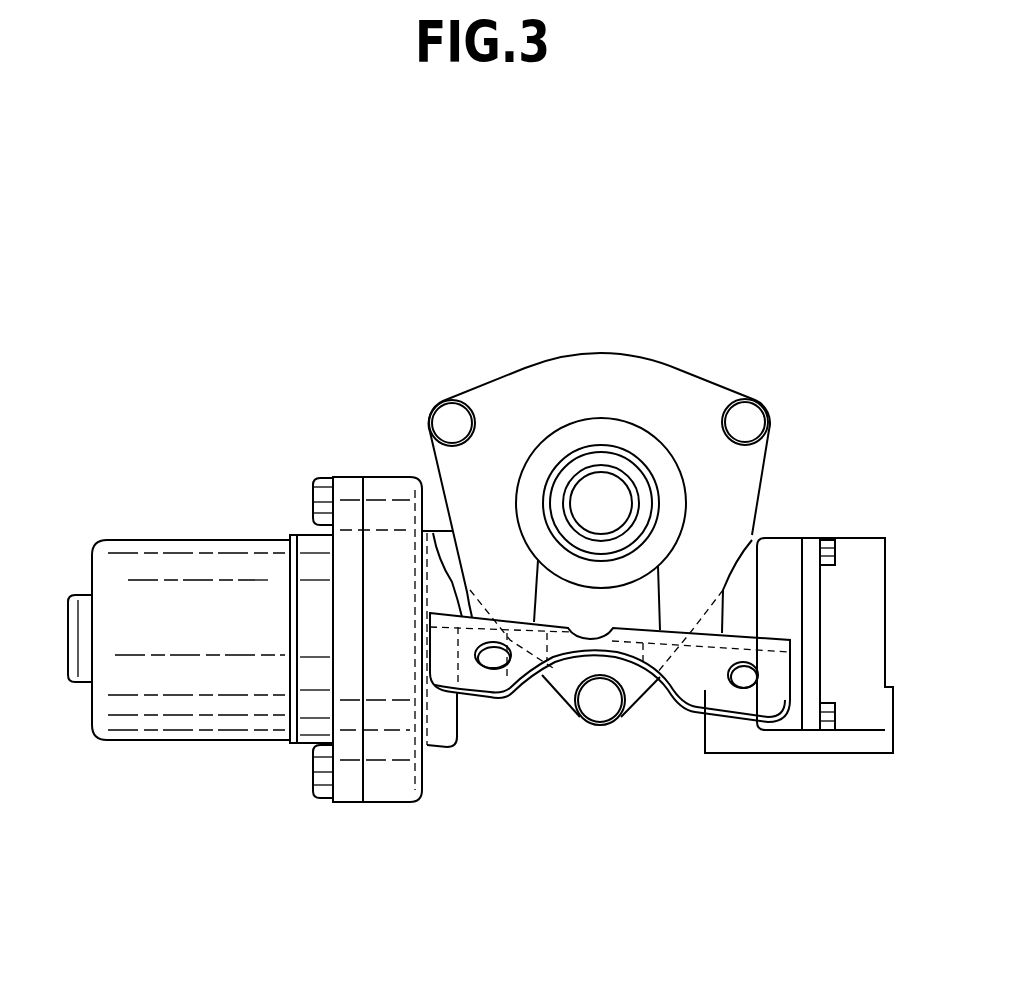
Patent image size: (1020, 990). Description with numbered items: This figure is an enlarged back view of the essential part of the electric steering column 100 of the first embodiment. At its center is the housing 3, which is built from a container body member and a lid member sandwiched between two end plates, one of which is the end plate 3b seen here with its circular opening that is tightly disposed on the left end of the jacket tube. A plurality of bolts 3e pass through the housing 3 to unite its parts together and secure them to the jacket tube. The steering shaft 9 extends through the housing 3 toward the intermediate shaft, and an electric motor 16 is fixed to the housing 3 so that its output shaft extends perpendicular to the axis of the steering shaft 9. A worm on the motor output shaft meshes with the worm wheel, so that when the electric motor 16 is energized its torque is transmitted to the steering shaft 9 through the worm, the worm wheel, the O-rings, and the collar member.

The electric steering column 100 is at (623, 218).
The housing 3 is at (540, 340).
The end plate 3b is at (636, 373).
The bolts 3e is at (452, 417).
The steering shaft 9 is at (605, 500).
The electric motor 16 is at (195, 743).